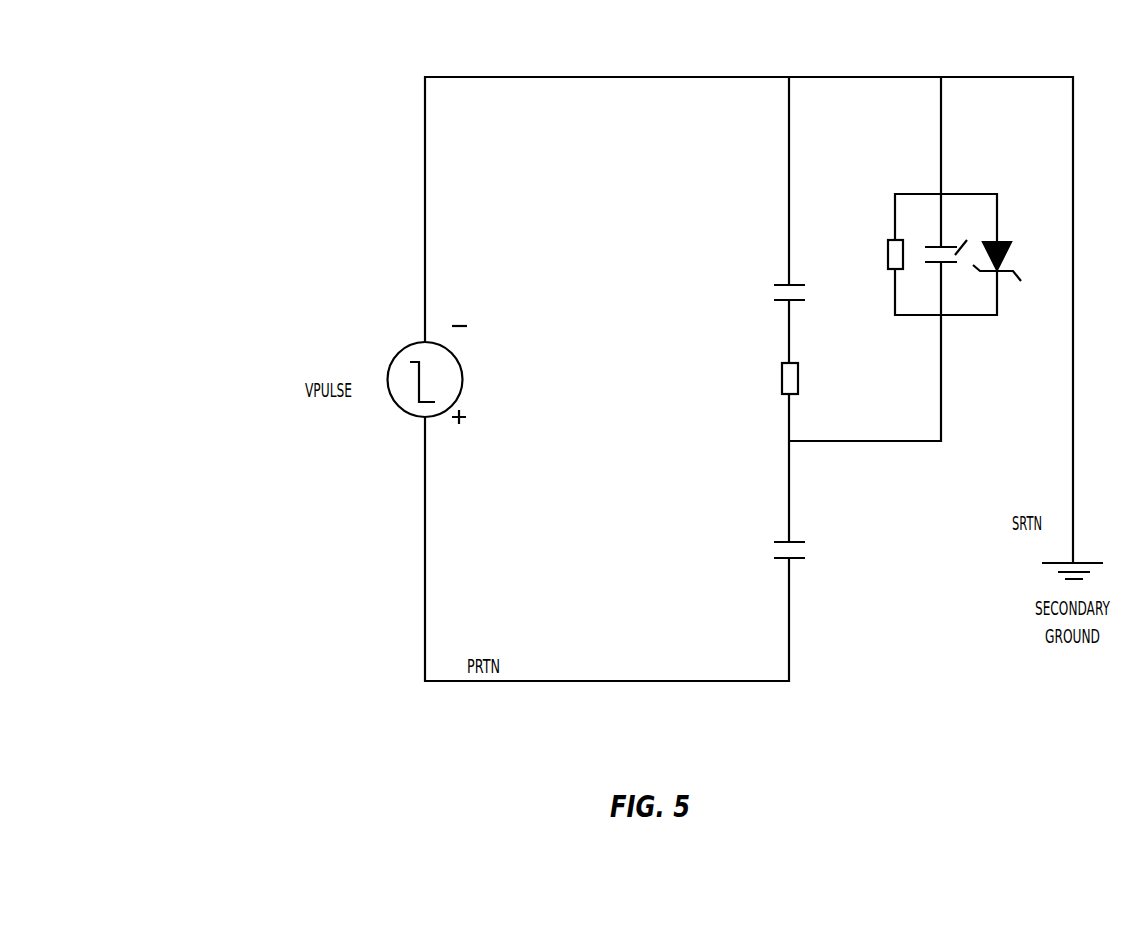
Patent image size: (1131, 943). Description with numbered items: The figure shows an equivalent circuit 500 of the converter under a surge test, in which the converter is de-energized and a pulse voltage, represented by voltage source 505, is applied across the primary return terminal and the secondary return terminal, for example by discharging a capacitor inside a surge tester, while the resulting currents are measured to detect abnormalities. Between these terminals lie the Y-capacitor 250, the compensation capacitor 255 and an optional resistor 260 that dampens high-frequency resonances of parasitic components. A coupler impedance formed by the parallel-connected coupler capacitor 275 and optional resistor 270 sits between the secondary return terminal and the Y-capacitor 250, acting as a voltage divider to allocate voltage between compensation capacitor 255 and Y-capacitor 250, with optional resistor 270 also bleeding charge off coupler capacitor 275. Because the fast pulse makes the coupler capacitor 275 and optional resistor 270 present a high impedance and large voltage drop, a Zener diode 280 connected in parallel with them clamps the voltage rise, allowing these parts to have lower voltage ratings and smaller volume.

The equivalent circuit 500 is at (283, 67).
The voltage source 505 is at (407, 345).
The Y-capacitor 250 is at (781, 542).
The compensation capacitor 255 is at (781, 285).
The optional resistor 260 is at (783, 365).
The optional resistor 270 is at (893, 240).
The coupler capacitor 275 is at (948, 254).
The Zener diode 280 is at (1000, 243).